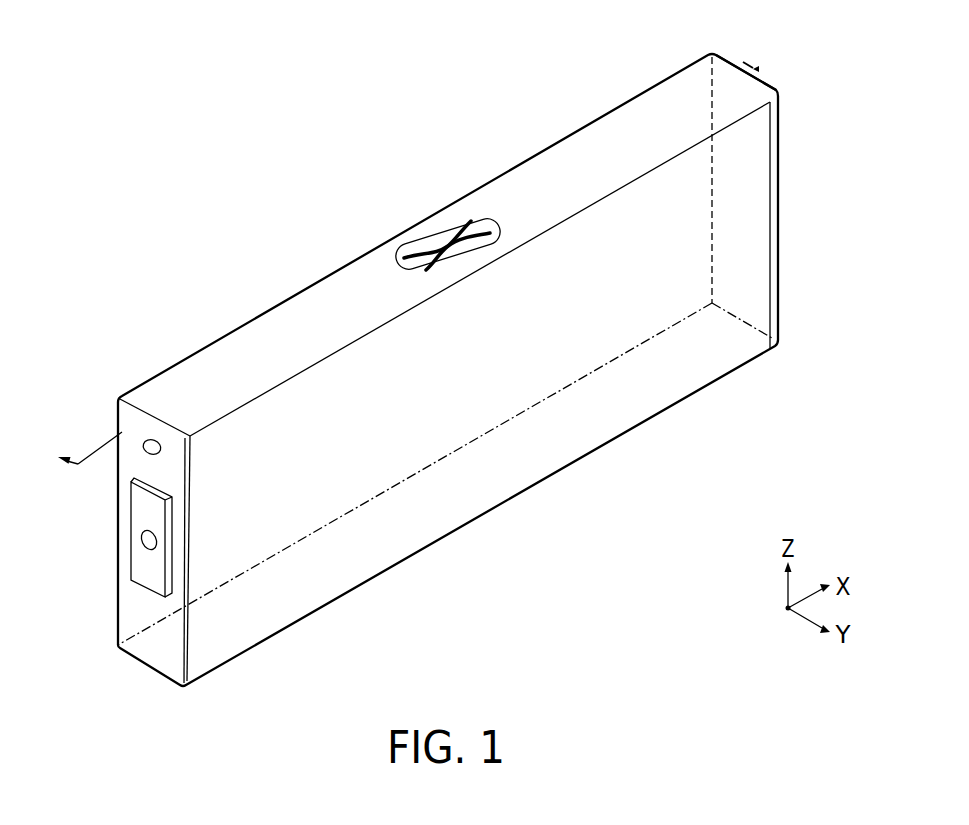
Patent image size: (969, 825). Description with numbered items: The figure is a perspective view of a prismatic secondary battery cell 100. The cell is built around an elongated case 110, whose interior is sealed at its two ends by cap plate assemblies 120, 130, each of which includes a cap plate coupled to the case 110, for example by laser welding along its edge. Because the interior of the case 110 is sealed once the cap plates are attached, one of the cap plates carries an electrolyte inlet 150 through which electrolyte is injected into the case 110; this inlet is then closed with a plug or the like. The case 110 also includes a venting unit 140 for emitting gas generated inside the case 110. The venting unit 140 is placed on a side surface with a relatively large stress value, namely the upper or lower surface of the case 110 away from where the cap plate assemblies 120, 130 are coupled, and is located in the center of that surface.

The secondary battery cell 100 is at (235, 36).
The case 110 is at (573, 423).
The cap plate assembly 120 is at (118, 551).
The cap plate assembly 130 is at (779, 173).
The venting unit 140 is at (438, 237).
The electrolyte inlet 150 is at (143, 452).